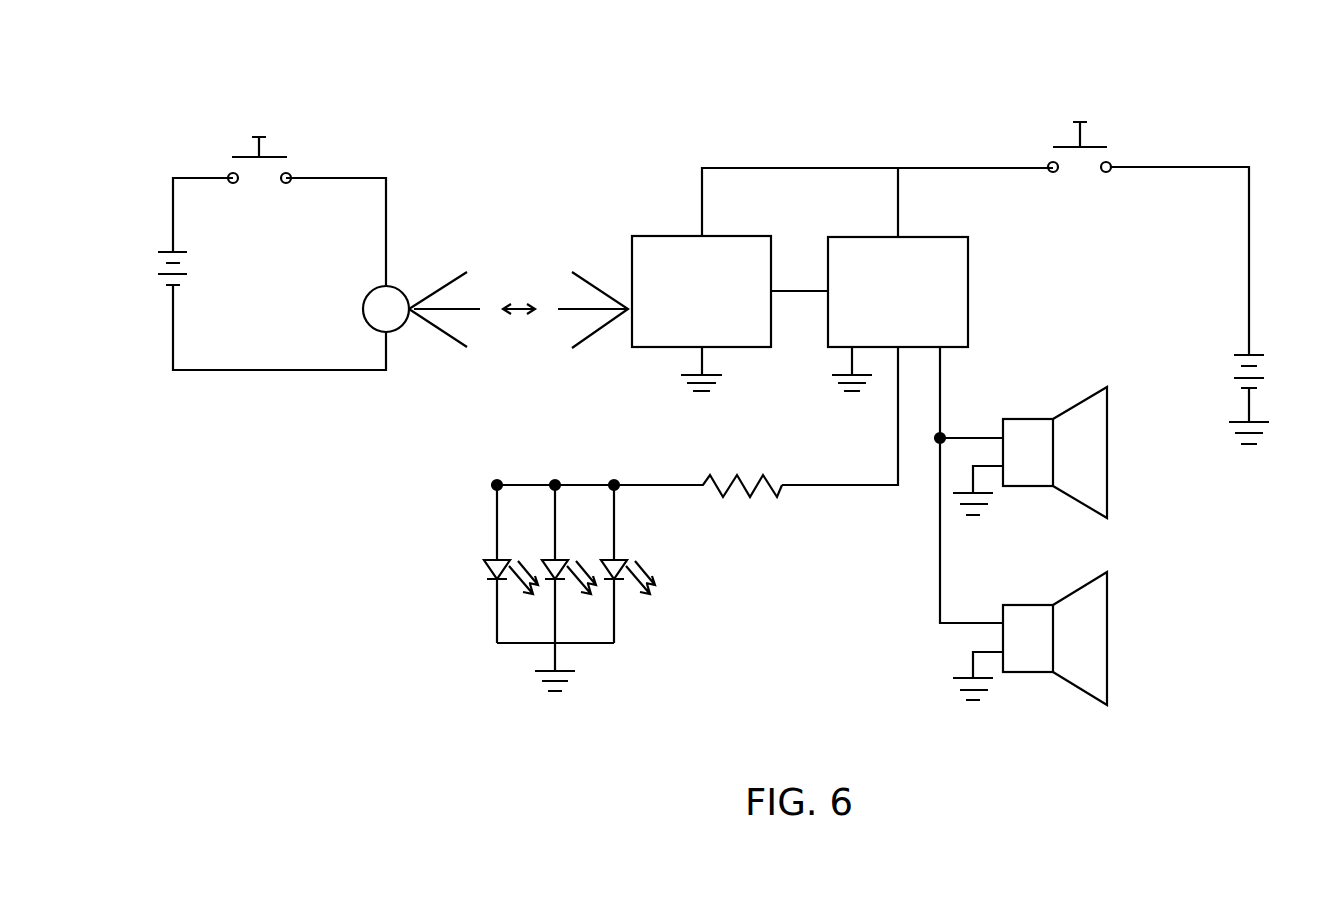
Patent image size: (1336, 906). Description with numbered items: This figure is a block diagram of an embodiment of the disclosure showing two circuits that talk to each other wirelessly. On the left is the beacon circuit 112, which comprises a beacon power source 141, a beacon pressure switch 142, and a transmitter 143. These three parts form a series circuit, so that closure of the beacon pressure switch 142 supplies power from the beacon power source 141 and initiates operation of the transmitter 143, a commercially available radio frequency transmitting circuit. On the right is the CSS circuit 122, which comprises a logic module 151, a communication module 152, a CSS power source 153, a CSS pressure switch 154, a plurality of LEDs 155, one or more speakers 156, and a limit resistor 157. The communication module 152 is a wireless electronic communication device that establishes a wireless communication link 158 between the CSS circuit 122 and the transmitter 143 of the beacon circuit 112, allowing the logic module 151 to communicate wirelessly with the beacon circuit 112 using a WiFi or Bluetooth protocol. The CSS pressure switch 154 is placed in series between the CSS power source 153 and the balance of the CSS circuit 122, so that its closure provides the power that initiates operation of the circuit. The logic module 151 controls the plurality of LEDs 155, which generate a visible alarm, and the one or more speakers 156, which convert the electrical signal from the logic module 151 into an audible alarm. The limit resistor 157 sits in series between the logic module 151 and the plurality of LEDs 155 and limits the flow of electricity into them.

The beacon circuit 112 is at (186, 138).
The beacon pressure switch 142 is at (275, 153).
The beacon power source 141 is at (187, 269).
The transmitter 143 is at (363, 309).
The wireless communication link 158 is at (518, 300).
The communication module 152 is at (771, 236).
The logic module 151 is at (968, 270).
The CSS pressure switch 154 is at (1104, 137).
The CSS circuit 122 is at (1178, 167).
The CSS power source 153 is at (1230, 377).
The speakers 156 is at (1113, 612).
The limit resistor 157 is at (758, 490).
The plurality of LEDs 155 is at (652, 568).